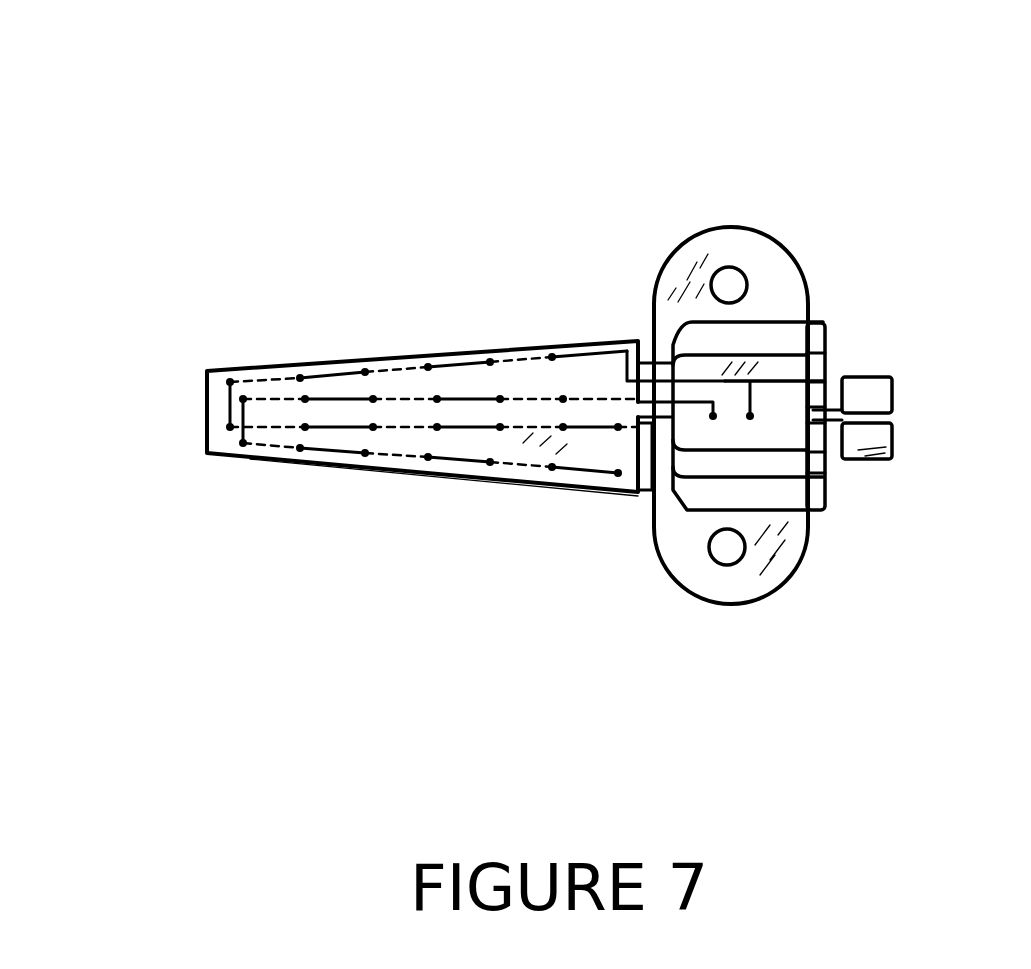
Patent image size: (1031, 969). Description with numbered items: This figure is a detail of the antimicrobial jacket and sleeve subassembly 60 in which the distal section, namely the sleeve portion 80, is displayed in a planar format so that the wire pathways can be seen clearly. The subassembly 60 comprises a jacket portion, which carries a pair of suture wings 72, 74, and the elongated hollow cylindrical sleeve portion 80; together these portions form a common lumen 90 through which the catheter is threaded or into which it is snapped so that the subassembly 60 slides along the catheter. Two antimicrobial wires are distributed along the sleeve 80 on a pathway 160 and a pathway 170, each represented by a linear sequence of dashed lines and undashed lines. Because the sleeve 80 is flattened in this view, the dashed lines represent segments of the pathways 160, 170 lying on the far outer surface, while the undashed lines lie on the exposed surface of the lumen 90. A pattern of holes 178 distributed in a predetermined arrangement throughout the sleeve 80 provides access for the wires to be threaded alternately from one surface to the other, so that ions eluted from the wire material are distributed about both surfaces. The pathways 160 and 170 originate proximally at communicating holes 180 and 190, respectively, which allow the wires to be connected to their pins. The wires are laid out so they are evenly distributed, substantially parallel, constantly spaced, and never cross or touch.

The jacket and sleeve subassembly 60 is at (385, 245).
The sleeve portion 80 is at (380, 340).
The common lumen 90 is at (220, 410).
The holes 178 is at (735, 716).
The pathway 160 is at (640, 330).
The pathway 170 is at (690, 340).
The suture wing 72 is at (765, 585).
The suture wing 74 is at (783, 263).
The communicating hole 180 is at (842, 455).
The communicating hole 190 is at (780, 500).